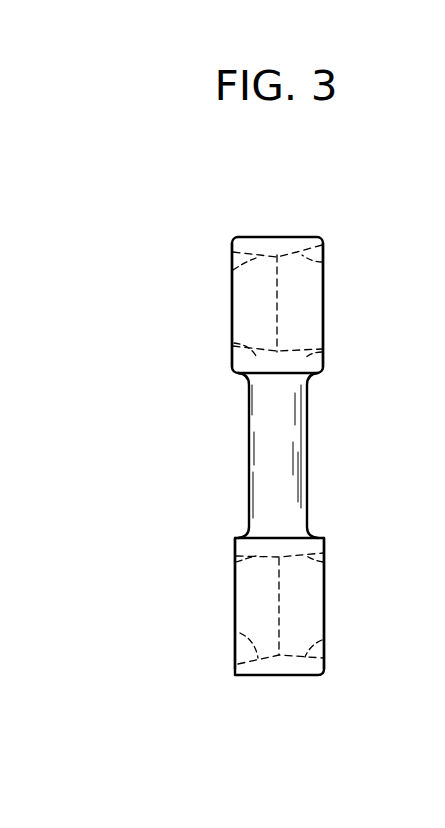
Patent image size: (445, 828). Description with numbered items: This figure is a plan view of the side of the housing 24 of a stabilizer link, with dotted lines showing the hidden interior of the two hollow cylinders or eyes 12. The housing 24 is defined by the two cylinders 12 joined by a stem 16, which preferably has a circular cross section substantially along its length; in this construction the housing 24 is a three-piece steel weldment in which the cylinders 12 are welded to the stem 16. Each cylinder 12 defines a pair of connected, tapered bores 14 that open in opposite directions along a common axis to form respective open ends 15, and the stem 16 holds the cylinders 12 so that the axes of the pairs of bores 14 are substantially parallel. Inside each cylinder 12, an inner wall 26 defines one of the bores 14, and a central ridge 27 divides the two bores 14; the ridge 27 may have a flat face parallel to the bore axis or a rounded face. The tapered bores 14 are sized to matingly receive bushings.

The hollow cylinder 12 is at (278, 443).
The tapered bore 14 is at (325, 260).
The open end 15 is at (224, 301).
The stem 16 is at (248, 419).
The housing 24 is at (316, 435).
The inner wall 26 is at (237, 268).
The central ridge 27 is at (278, 297).